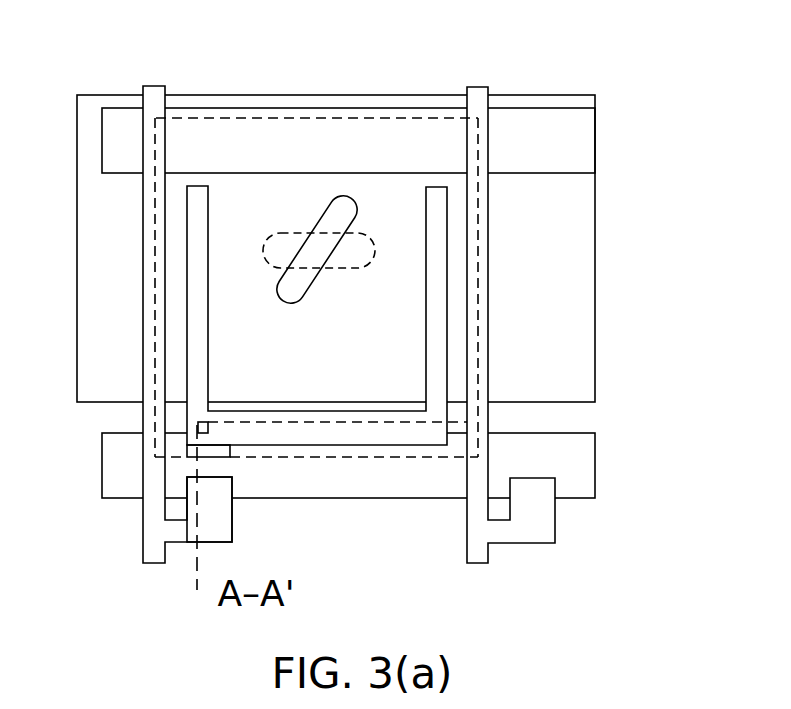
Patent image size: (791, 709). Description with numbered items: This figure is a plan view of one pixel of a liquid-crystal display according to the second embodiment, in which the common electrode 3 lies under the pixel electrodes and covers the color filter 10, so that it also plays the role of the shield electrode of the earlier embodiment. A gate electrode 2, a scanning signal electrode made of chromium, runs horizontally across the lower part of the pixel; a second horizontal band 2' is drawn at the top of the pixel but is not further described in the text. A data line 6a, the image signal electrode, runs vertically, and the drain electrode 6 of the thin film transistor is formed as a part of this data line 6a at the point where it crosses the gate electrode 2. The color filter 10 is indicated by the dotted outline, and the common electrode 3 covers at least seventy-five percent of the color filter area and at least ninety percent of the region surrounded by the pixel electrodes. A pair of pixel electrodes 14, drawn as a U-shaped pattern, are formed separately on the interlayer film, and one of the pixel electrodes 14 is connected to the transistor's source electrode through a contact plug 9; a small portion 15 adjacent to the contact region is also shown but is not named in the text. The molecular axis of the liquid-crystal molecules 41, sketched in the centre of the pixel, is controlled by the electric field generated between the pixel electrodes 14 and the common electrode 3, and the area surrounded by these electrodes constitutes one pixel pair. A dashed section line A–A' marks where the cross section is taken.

The gate electrode 2 is at (379, 464).
The gate line / upper band 2' is at (393, 140).
The common electrode 3 is at (584, 327).
The drain electrode 6 is at (233, 528).
The data line 6a is at (157, 90).
The contact plug 9 is at (198, 427).
The color filter 10 is at (317, 120).
The pixel electrodes 14 is at (200, 186).
The connection portion 15 is at (243, 445).
The liquid-crystal molecules 41 is at (328, 304).